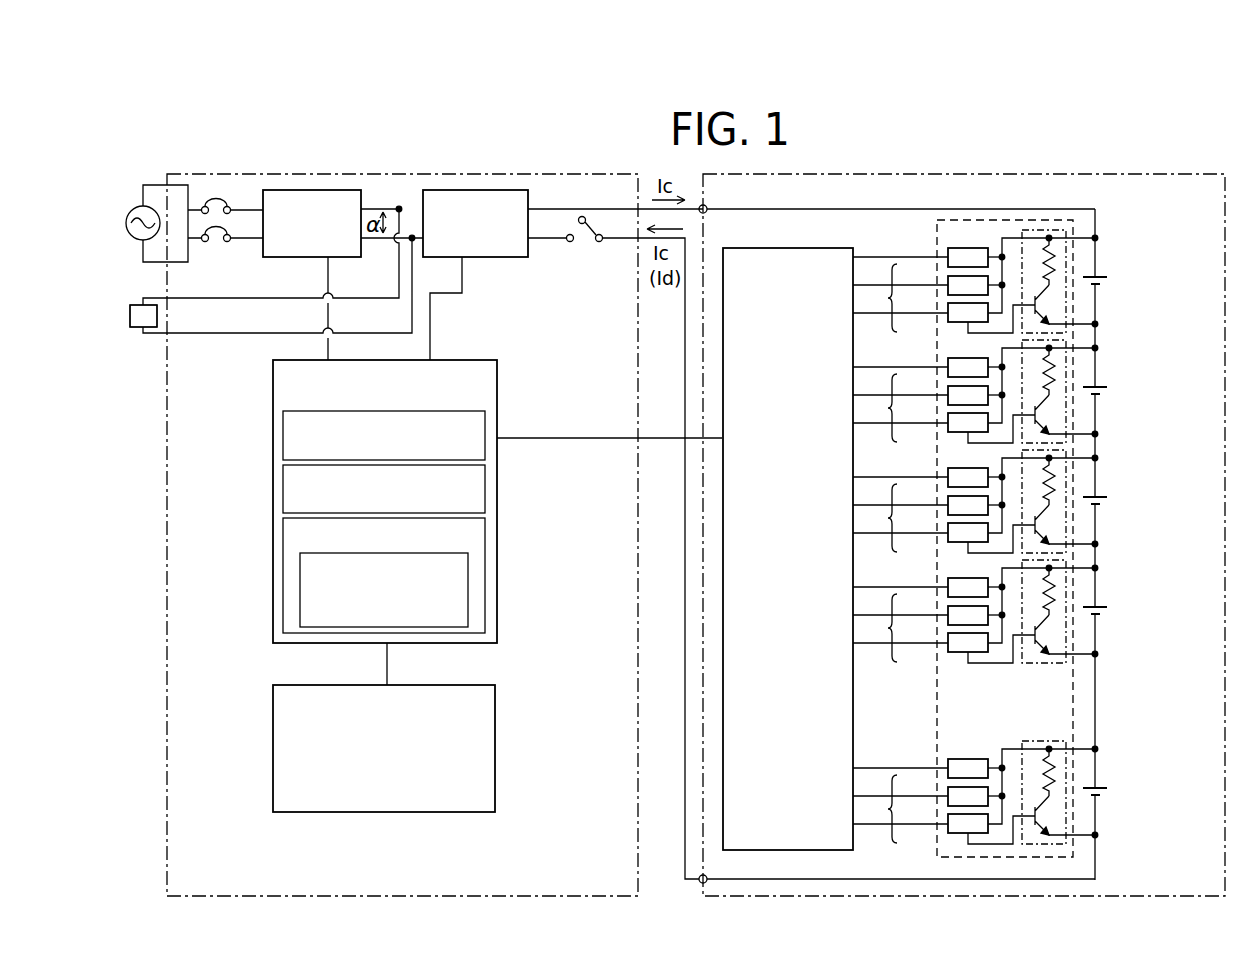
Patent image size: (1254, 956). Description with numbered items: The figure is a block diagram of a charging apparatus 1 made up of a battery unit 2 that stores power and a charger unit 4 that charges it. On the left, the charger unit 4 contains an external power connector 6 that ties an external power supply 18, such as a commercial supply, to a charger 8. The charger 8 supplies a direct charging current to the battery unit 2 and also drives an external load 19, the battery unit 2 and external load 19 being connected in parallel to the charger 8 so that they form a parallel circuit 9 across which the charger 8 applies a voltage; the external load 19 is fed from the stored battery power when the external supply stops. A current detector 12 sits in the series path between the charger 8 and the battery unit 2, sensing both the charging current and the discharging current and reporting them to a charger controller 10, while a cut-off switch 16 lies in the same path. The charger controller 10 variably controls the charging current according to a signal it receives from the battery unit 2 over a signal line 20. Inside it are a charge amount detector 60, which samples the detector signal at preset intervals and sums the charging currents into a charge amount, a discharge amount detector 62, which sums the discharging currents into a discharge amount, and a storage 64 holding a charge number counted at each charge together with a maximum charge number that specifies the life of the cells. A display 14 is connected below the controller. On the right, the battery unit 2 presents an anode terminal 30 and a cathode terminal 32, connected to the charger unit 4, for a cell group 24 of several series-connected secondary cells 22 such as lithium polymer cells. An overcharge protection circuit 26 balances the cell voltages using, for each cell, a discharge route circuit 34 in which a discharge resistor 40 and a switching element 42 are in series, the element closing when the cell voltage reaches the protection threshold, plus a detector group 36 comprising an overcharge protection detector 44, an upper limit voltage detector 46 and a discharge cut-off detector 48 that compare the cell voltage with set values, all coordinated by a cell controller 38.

The charging apparatus 1 is at (615, 148).
The battery unit 2 is at (893, 174).
The charger unit 4 is at (370, 174).
The external power connector 6 is at (221, 252).
The charger 8 is at (284, 258).
The parallel circuit 9 is at (208, 346).
The charger controller 10 is at (273, 400).
The current detector 12 is at (485, 258).
The display 14 is at (273, 745).
The cut-off switch 16 is at (588, 254).
The external power supply 18 is at (143, 222).
The external load 19 is at (130, 318).
The signal line 20 is at (560, 437).
The secondary cell 22 is at (1119, 539).
The cell group 24 is at (1163, 311).
The overcharge protection circuit 26 is at (935, 237).
The anode terminal 30 is at (708, 205).
The cathode terminal 32 is at (708, 875).
The discharge route circuit 34 is at (1080, 544).
The detector group 36 is at (900, 550).
The cell controller 38 is at (791, 248).
The discharge resistor 40 is at (1089, 517).
The switching element 42 is at (1085, 561).
The overcharge protection detector 44 is at (1001, 542).
The upper limit voltage detector 46 is at (954, 549).
The discharge cut-off detector 48 is at (954, 521).
The charge amount detector 60 is at (285, 437).
The discharge amount detector 62 is at (285, 490).
The storage 64 is at (285, 543).